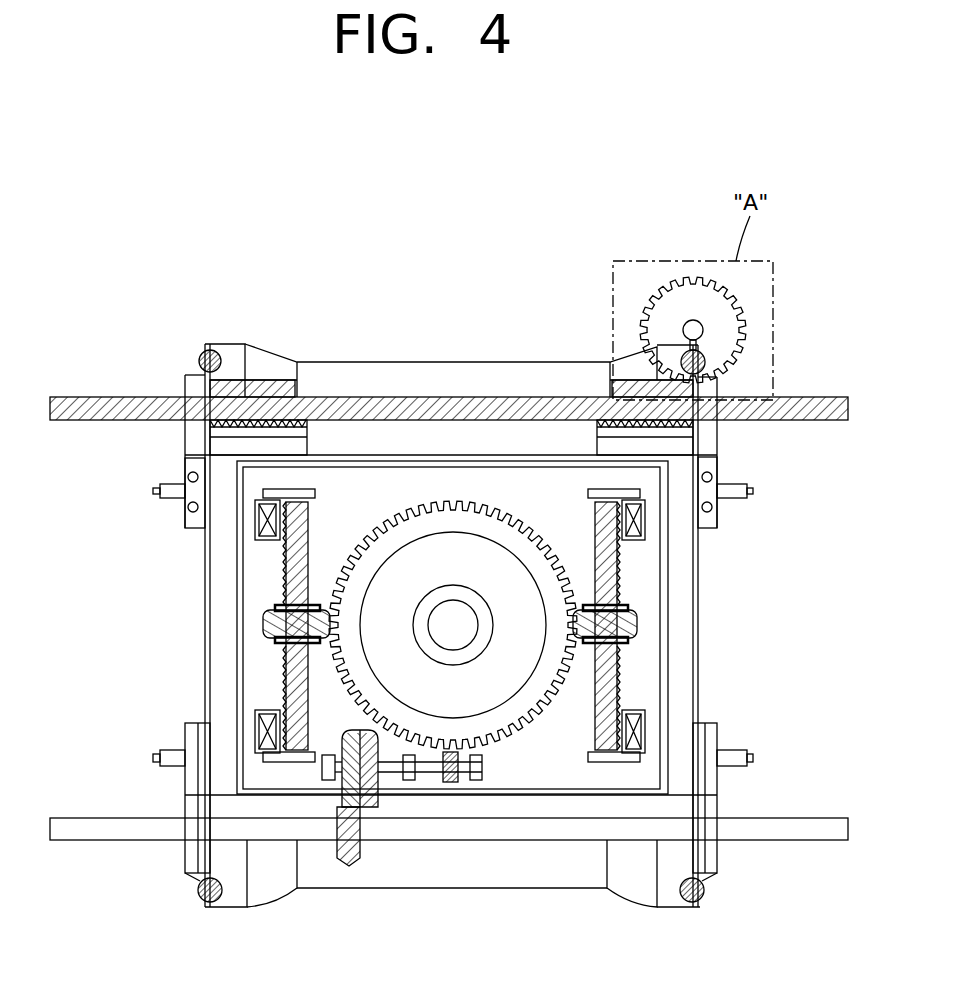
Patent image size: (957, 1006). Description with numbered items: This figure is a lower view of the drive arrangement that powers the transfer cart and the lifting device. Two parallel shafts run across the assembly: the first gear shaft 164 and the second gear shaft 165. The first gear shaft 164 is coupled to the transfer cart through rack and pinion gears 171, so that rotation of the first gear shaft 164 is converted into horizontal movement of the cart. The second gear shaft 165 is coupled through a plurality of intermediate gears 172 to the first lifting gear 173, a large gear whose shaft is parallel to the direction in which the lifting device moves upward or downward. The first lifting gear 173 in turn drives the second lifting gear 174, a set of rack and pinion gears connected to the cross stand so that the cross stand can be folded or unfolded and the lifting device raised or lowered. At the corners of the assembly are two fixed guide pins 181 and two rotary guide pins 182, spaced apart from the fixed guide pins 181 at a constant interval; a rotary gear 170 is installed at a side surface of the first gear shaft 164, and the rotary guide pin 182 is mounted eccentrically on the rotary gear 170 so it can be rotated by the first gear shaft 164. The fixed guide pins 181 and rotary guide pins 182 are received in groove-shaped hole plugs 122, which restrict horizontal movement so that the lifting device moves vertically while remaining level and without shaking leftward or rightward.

The hole plug 122 is at (217, 353).
The first gear shaft 164 is at (828, 421).
The second gear shaft 165 is at (812, 830).
The rotary gear 170 is at (720, 310).
The rack and pinion gears 171 is at (274, 372).
The intermediate gears 172 is at (374, 814).
The first lifting gear 173 is at (550, 668).
The second lifting gear 174 is at (636, 548).
The fixed guide pin 181 is at (200, 356).
The rotary guide pin 182 is at (708, 360).